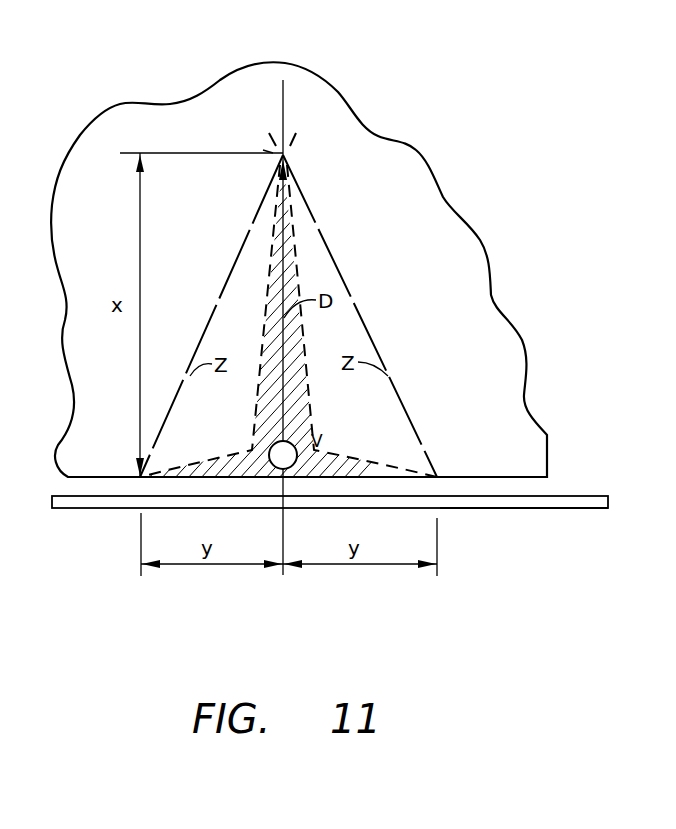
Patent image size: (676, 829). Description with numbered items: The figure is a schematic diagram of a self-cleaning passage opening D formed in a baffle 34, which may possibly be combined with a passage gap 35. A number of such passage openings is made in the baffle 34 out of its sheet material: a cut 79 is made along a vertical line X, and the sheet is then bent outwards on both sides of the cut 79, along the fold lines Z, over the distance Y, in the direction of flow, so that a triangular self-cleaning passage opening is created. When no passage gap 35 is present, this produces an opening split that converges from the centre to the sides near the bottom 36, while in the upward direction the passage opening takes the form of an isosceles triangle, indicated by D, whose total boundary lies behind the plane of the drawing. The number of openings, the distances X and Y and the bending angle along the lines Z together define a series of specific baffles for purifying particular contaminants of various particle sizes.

The baffle 34 is at (478, 449).
The passage gap 35 is at (562, 496).
The bottom 36 is at (578, 508).
The cut 79 is at (285, 250).